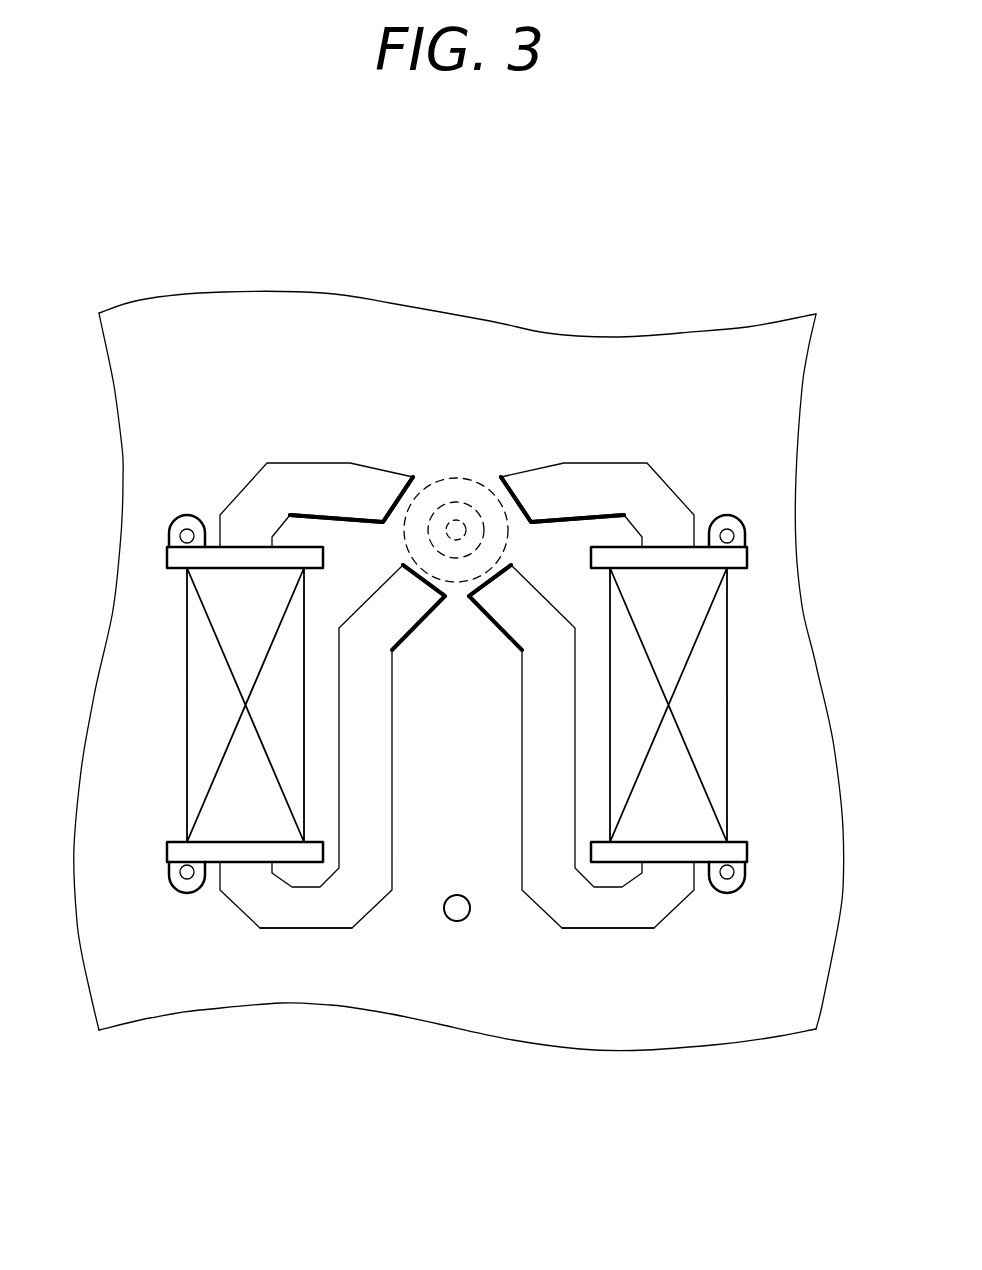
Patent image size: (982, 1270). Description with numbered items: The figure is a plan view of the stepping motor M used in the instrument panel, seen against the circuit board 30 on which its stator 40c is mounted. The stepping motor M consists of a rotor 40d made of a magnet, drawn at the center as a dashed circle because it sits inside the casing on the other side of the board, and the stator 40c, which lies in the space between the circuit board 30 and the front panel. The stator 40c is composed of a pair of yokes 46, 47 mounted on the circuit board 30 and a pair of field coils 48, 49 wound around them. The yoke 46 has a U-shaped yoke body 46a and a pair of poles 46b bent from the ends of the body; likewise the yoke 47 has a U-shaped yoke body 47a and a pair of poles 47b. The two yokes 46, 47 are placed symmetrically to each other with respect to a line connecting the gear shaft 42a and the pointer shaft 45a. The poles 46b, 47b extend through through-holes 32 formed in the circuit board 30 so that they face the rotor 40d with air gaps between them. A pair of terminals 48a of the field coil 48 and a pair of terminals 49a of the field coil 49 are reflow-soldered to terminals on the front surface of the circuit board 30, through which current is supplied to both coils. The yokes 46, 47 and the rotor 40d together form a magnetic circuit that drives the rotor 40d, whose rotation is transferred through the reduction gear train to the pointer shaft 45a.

The circuit board 30 is at (765, 299).
The through-holes 32 is at (380, 517).
The stator 40c is at (242, 962).
The rotor 40d is at (438, 468).
The gear shaft 42a is at (467, 532).
The pointer shaft 45a is at (457, 921).
The yoke 46 is at (633, 449).
The yoke body 46a is at (610, 915).
The poles 46b is at (527, 500).
The yoke 47 is at (285, 463).
The yoke body 47a is at (318, 917).
The poles 47b is at (392, 498).
The field coil 48 is at (712, 669).
The terminals 48a is at (747, 527).
The field coil 49 is at (197, 630).
The terminals 49a is at (172, 513).
The stepping motor M is at (574, 367).